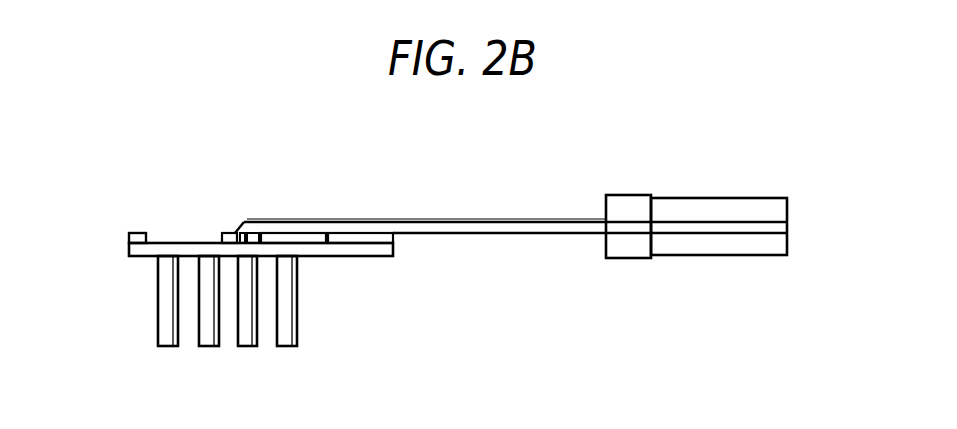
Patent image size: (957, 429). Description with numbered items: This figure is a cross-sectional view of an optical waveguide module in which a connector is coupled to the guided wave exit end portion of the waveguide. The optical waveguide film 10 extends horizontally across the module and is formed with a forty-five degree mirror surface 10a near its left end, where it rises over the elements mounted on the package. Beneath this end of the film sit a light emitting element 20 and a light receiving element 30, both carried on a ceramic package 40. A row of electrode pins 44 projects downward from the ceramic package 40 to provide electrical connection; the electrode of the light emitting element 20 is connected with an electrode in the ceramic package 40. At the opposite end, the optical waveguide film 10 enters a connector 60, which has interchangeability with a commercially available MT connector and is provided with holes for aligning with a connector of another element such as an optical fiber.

The optical waveguide film 10 is at (480, 211).
The 45° mirror surface 10a is at (241, 225).
The light emitting element 20 is at (223, 242).
The light receiving element 30 is at (253, 238).
The ceramic package 40 is at (142, 257).
The electrode pin 44 is at (287, 338).
The connector 60 is at (716, 205).